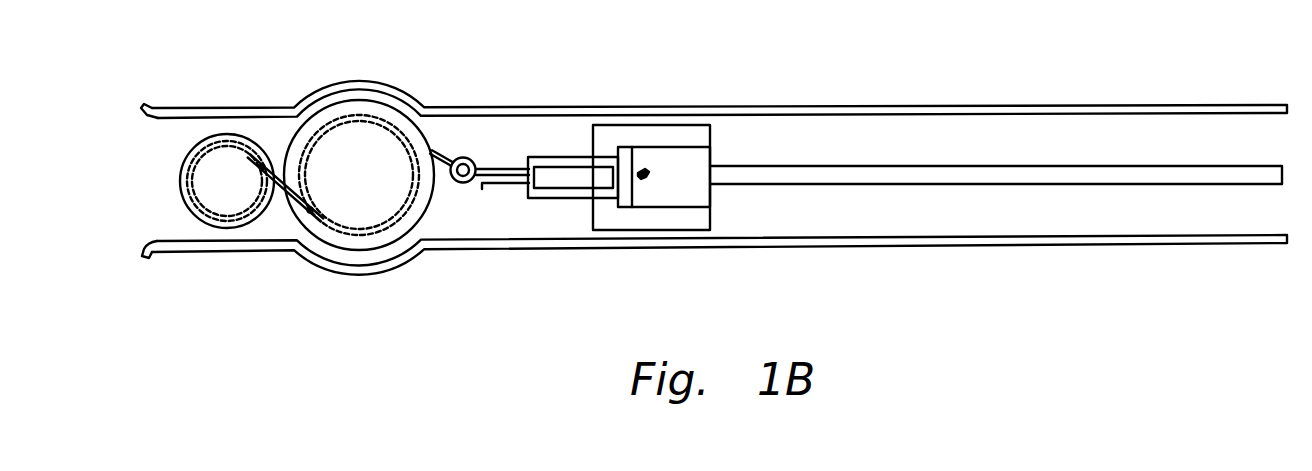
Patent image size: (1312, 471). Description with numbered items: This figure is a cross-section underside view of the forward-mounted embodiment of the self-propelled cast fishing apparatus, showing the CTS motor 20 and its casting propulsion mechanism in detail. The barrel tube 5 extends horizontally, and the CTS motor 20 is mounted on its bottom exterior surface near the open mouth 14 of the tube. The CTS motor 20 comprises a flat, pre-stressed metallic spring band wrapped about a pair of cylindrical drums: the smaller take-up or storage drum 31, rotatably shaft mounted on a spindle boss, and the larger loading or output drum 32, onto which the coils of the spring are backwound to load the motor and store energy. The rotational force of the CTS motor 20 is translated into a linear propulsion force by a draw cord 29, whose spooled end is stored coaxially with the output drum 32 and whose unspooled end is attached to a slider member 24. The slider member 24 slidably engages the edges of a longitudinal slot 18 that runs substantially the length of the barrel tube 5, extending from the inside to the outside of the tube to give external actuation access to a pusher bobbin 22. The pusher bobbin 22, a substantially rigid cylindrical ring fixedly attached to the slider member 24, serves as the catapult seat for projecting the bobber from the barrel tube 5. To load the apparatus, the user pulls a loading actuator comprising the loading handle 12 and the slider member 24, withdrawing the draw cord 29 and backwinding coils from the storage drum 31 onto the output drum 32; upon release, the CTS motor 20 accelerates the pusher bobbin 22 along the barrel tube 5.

The barrel tube 5 is at (812, 106).
The loading handle 12 is at (563, 177).
The mouth 14 is at (158, 108).
The longitudinal slot 18 is at (1020, 166).
The CTS motor 20 is at (274, 228).
The pusher bobbin 22 is at (677, 125).
The slider member 24 is at (712, 160).
The draw cord 29 is at (434, 154).
The storage drum 31 is at (237, 132).
The output drum 32 is at (360, 100).